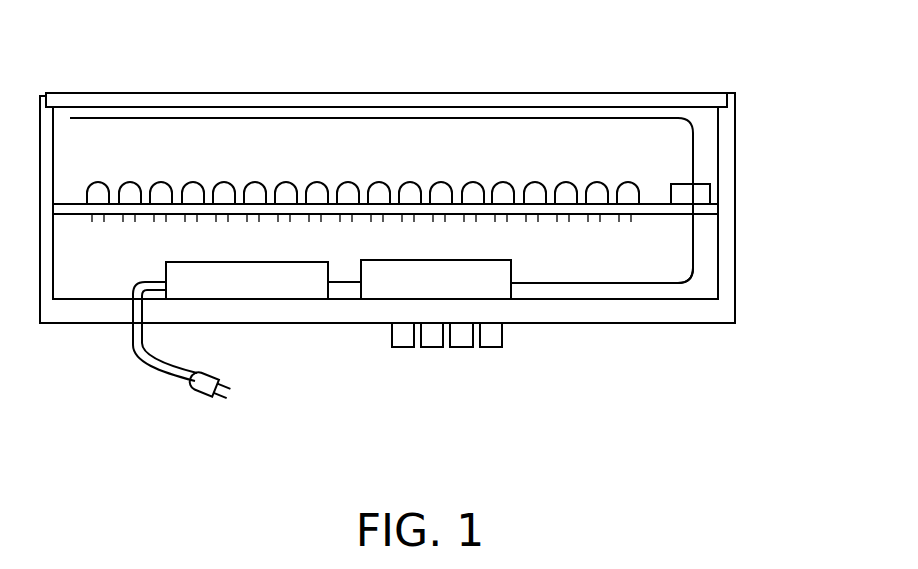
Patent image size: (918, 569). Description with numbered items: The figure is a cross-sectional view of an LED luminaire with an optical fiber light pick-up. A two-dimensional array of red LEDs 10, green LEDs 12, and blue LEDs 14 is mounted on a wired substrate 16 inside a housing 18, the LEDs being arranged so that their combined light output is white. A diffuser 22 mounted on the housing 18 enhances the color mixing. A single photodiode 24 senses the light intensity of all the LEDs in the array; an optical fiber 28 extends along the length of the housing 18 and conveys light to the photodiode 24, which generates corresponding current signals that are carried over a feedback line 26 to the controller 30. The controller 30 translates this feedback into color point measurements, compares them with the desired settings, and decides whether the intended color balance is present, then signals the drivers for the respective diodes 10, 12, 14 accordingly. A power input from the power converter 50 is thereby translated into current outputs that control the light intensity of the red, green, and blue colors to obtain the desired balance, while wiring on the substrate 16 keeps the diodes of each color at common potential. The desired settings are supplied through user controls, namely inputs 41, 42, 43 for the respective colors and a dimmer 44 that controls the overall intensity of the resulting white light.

The red LEDs 10 is at (98, 186).
The green LEDs 12 is at (131, 187).
The blue LEDs 14 is at (163, 187).
The wired substrate 16 is at (113, 214).
The housing 18 is at (613, 313).
The diffuser 22 is at (510, 93).
The photodiode 24 is at (702, 193).
The feedback line 26 is at (694, 255).
The reflector 28 is at (628, 118).
The controller 30 is at (378, 290).
The input 41 is at (402, 340).
The input 42 is at (432, 340).
The input 43 is at (462, 338).
The dimmer 44 is at (490, 338).
The power converter 50 is at (265, 290).